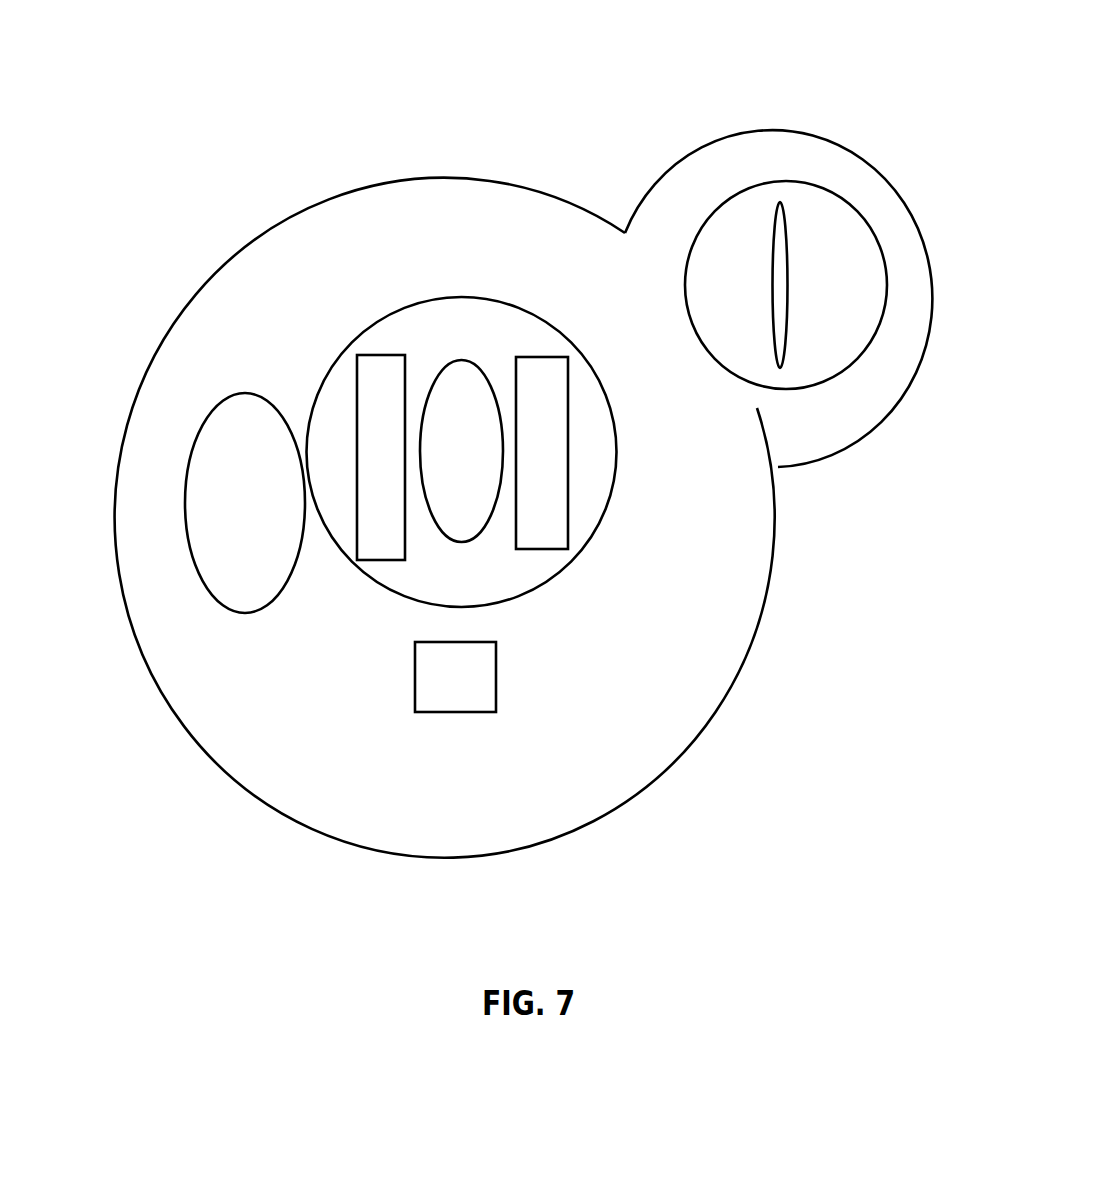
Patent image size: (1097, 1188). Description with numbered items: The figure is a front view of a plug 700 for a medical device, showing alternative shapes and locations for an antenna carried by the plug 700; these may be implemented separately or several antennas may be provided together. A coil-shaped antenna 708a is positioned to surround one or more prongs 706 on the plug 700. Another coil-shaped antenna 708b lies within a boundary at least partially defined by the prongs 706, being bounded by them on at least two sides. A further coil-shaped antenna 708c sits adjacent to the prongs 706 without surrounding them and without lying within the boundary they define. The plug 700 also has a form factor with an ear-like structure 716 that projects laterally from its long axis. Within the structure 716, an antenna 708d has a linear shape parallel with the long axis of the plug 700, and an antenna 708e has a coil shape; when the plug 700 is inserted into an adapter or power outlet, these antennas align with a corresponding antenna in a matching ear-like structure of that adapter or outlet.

The plug 700 is at (305, 223).
The prongs 706 is at (353, 397).
The antenna 708a is at (448, 292).
The antenna 708b is at (477, 373).
The antenna 708c is at (200, 422).
The antenna 708d is at (778, 270).
The antenna 708e is at (867, 228).
The structure 716 is at (743, 133).